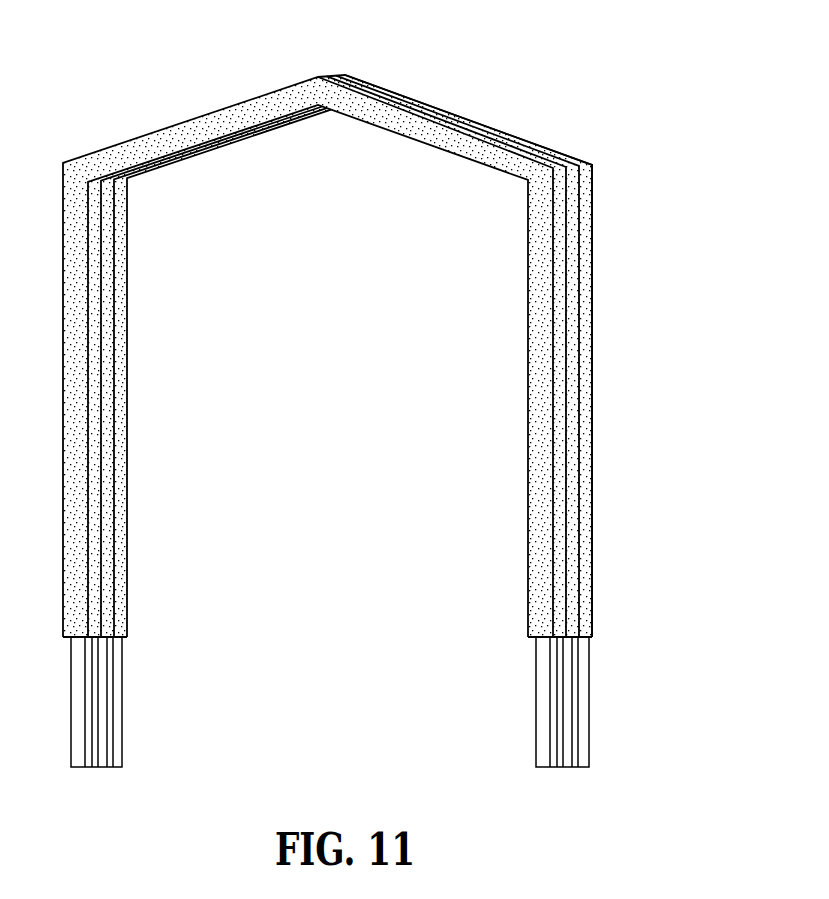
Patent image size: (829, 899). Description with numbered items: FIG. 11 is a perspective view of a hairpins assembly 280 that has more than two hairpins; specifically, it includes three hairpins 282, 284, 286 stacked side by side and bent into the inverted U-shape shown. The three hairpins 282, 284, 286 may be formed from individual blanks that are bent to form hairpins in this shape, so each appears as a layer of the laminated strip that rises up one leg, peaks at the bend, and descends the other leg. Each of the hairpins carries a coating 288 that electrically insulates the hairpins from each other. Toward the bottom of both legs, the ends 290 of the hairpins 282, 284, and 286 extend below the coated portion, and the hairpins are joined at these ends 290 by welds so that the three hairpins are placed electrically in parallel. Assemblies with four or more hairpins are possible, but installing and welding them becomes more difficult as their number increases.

The hairpins assembly 280 is at (482, 92).
The hairpin 282 is at (558, 595).
The hairpin 284 is at (592, 430).
The hairpin 286 is at (585, 267).
The coating 288 is at (535, 613).
The ends 290 is at (583, 688).